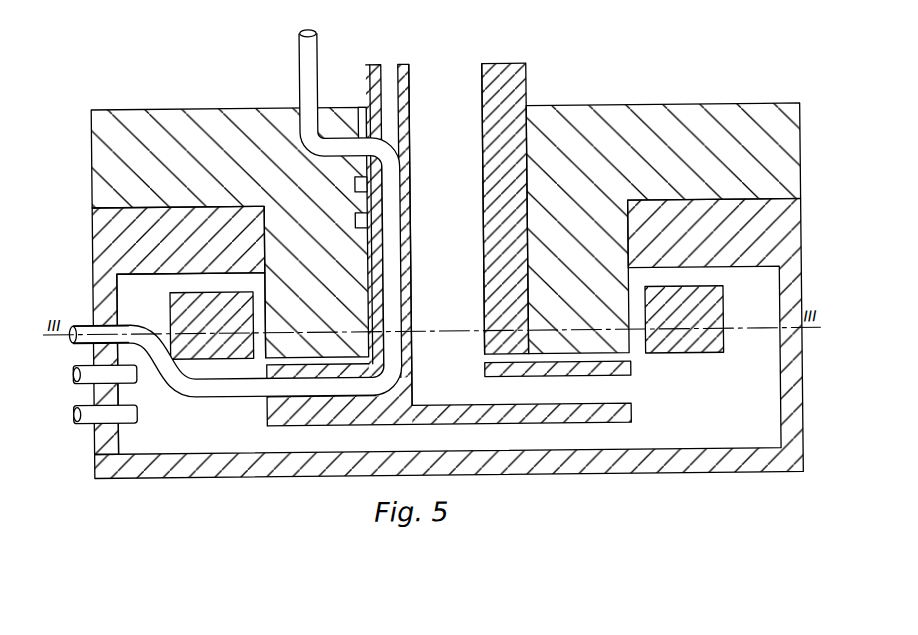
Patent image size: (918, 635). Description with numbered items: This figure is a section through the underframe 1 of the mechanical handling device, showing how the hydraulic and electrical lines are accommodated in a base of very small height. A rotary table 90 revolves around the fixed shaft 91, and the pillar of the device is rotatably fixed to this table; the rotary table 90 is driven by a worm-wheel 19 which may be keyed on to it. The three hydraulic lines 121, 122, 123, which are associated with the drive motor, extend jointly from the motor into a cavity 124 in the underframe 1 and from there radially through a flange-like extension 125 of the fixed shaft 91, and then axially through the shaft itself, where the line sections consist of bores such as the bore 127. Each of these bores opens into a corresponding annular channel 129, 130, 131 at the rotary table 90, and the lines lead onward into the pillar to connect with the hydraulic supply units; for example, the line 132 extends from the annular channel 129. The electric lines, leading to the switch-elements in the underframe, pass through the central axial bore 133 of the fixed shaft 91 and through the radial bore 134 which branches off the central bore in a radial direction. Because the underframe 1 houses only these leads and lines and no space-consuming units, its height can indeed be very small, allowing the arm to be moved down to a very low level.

The underframe 1 is at (611, 468).
The worm-wheel 19 is at (691, 349).
The rotary table 90 is at (686, 120).
The fixed shaft 91 is at (516, 78).
The hydraulic line 121 is at (85, 322).
The hydraulic line 122 is at (136, 380).
The hydraulic line 123 is at (86, 420).
The cavity 124 is at (164, 437).
The flange-like extension 125 is at (289, 416).
The bore 127 is at (401, 200).
The annular channel 129 is at (364, 139).
The annular channel 130 is at (356, 184).
The annular channel 131 is at (357, 224).
The line 132 is at (302, 66).
The central axial bore 133 is at (461, 73).
The radial bore 134 is at (551, 404).